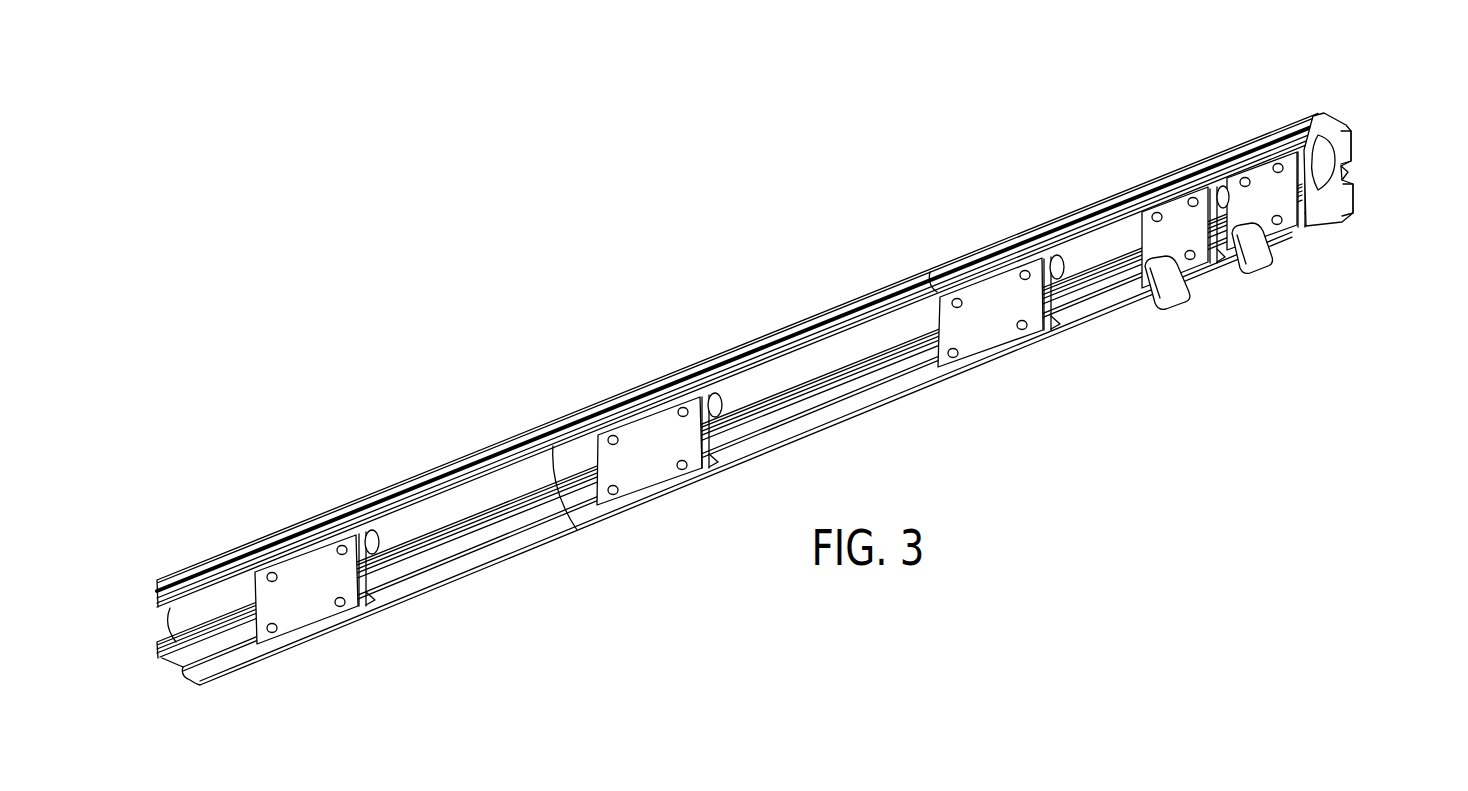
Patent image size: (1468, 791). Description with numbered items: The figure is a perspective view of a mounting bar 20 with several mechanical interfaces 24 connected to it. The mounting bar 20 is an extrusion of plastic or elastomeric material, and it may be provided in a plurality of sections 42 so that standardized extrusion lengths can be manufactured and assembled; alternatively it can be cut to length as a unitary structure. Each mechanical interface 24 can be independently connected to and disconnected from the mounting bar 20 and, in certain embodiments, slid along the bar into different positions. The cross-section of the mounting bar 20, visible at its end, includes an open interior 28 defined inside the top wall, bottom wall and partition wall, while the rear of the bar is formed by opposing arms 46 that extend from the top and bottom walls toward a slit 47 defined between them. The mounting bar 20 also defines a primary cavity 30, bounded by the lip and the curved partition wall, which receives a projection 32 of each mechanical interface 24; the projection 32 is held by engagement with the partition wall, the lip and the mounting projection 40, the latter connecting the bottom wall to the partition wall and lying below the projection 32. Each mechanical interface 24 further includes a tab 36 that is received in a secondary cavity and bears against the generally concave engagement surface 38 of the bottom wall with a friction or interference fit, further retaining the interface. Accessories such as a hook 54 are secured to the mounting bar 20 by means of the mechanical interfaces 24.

The mounting bar 20 is at (766, 403).
The mechanical interface 24 is at (313, 583).
The open interior 28 is at (1378, 152).
The primary cavity 30 is at (205, 614).
The projection 32 is at (372, 535).
The tab 36 is at (377, 603).
The engagement surface 38 is at (187, 680).
The mounting projection 40 is at (173, 657).
The sections 42 is at (465, 463).
The arms 46 is at (1355, 153).
The slit 47 is at (1358, 172).
The hook 54 is at (1247, 262).